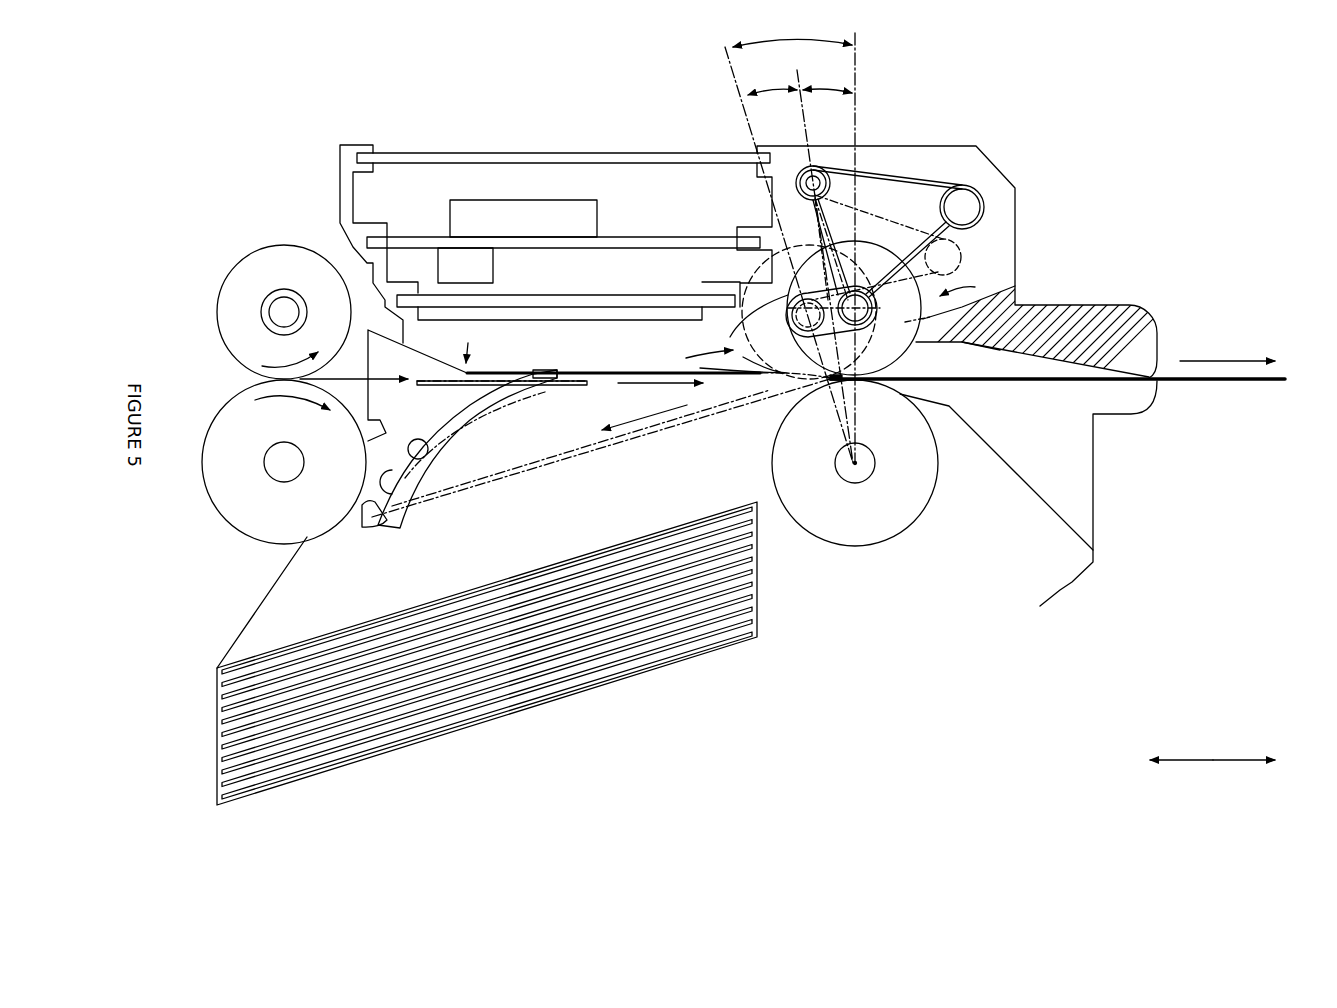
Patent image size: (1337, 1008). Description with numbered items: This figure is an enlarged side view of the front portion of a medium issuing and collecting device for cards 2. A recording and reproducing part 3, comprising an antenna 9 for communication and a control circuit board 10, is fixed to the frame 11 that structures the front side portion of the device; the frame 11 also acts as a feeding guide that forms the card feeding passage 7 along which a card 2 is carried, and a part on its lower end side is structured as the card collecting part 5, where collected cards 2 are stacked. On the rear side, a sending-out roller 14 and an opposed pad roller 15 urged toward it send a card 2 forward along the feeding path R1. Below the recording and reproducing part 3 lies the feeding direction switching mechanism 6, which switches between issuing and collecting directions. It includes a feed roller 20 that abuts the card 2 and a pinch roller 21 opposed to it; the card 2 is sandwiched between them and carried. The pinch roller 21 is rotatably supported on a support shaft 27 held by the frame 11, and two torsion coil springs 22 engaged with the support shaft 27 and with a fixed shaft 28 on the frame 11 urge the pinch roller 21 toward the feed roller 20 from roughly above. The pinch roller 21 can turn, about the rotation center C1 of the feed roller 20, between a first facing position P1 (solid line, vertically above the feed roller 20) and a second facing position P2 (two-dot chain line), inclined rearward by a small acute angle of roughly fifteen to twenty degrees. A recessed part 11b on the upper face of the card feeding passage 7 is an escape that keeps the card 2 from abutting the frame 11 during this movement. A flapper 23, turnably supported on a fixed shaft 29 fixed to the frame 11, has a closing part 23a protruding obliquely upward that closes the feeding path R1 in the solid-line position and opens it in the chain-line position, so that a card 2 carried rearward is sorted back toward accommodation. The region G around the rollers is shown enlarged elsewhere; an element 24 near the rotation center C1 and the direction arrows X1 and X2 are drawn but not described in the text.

The card 2 is at (578, 372).
The recording and reproducing part 3 is at (556, 250).
The card collecting part 5 is at (798, 616).
The feeding direction switching mechanism 6 is at (839, 244).
The card feeding passage 7 is at (741, 403).
The antenna 9 is at (621, 295).
The control circuit board 10 is at (689, 237).
The frame 11 is at (946, 376).
The recessed part 11b is at (976, 350).
The sending-out roller 14 is at (241, 535).
The pad roller 15 is at (281, 246).
The feed roller 20 is at (855, 487).
The pinch roller 21 is at (742, 347).
The torsion coil spring 22 is at (910, 230).
The flapper 23 is at (459, 428).
The closing part 23a is at (527, 371).
The roller shaft 24 is at (845, 483).
The support shaft 27 is at (872, 318).
The fixed shaft 28 is at (820, 166).
The fixed shaft 29 is at (430, 452).
The "G" part G is at (930, 170).
The first facing position P1 is at (969, 279).
The second facing position P2 is at (693, 359).
The feeding path R1 is at (471, 343).
The rotation center C1 is at (862, 478).
The direction X1 is at (1259, 760).
The direction X2 is at (1164, 760).